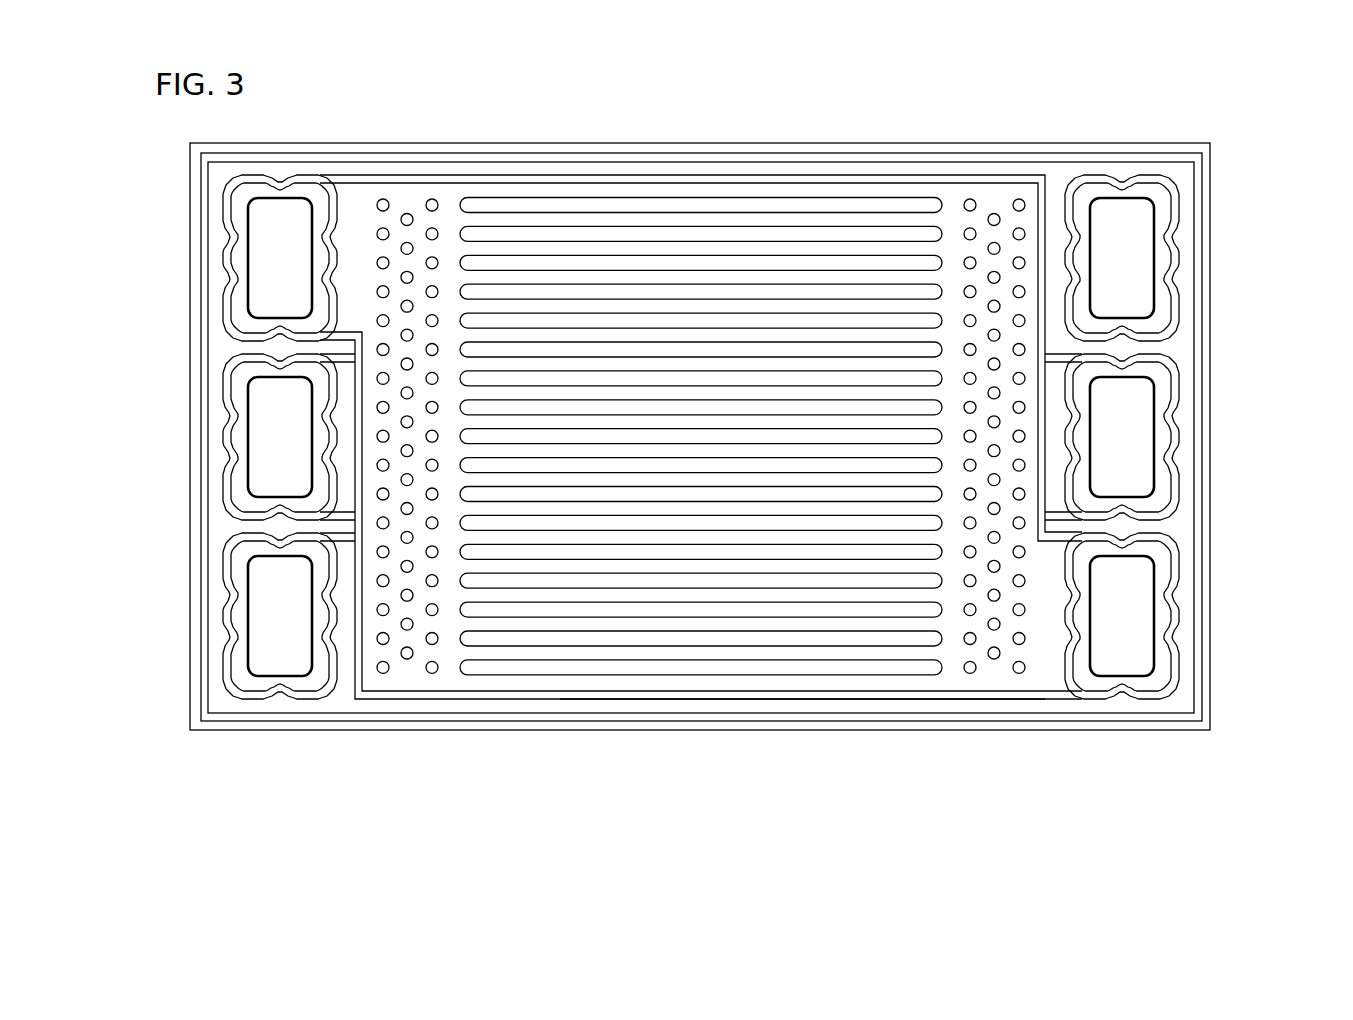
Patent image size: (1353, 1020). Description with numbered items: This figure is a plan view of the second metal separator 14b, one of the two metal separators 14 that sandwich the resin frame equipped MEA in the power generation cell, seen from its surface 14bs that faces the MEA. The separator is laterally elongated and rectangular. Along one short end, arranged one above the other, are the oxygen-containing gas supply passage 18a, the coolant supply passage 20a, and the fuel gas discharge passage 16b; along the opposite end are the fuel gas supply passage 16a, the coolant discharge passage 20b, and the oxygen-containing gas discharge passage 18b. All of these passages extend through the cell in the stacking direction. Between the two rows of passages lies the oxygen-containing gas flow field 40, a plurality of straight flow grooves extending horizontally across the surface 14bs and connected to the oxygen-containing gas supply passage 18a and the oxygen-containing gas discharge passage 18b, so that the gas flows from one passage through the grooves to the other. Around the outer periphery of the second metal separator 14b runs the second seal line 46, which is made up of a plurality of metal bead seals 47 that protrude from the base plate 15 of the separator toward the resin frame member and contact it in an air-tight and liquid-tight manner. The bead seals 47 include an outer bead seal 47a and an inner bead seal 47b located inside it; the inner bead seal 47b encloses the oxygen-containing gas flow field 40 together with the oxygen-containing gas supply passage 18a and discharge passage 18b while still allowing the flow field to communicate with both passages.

The metal separator 14 is at (854, 92).
The second metal separator 14b is at (701, 437).
The surface of the second metal separator 14bs is at (957, 653).
The base plate 15 is at (1057, 187).
The fuel gas supply passage 16a is at (1138, 257).
The fuel gas discharge passage 16b is at (258, 616).
The oxygen-containing gas supply passage 18a is at (263, 240).
The oxygen-containing gas discharge passage 18b is at (1140, 637).
The coolant supply passage 20a is at (265, 425).
The coolant discharge passage 20b is at (1138, 448).
The oxygen-containing gas flow field 40 is at (572, 220).
The second seal line 46 is at (701, 484).
The bead seal 47 is at (701, 484).
The outer bead seal 47a is at (728, 713).
The inner bead seal 47b is at (773, 767).